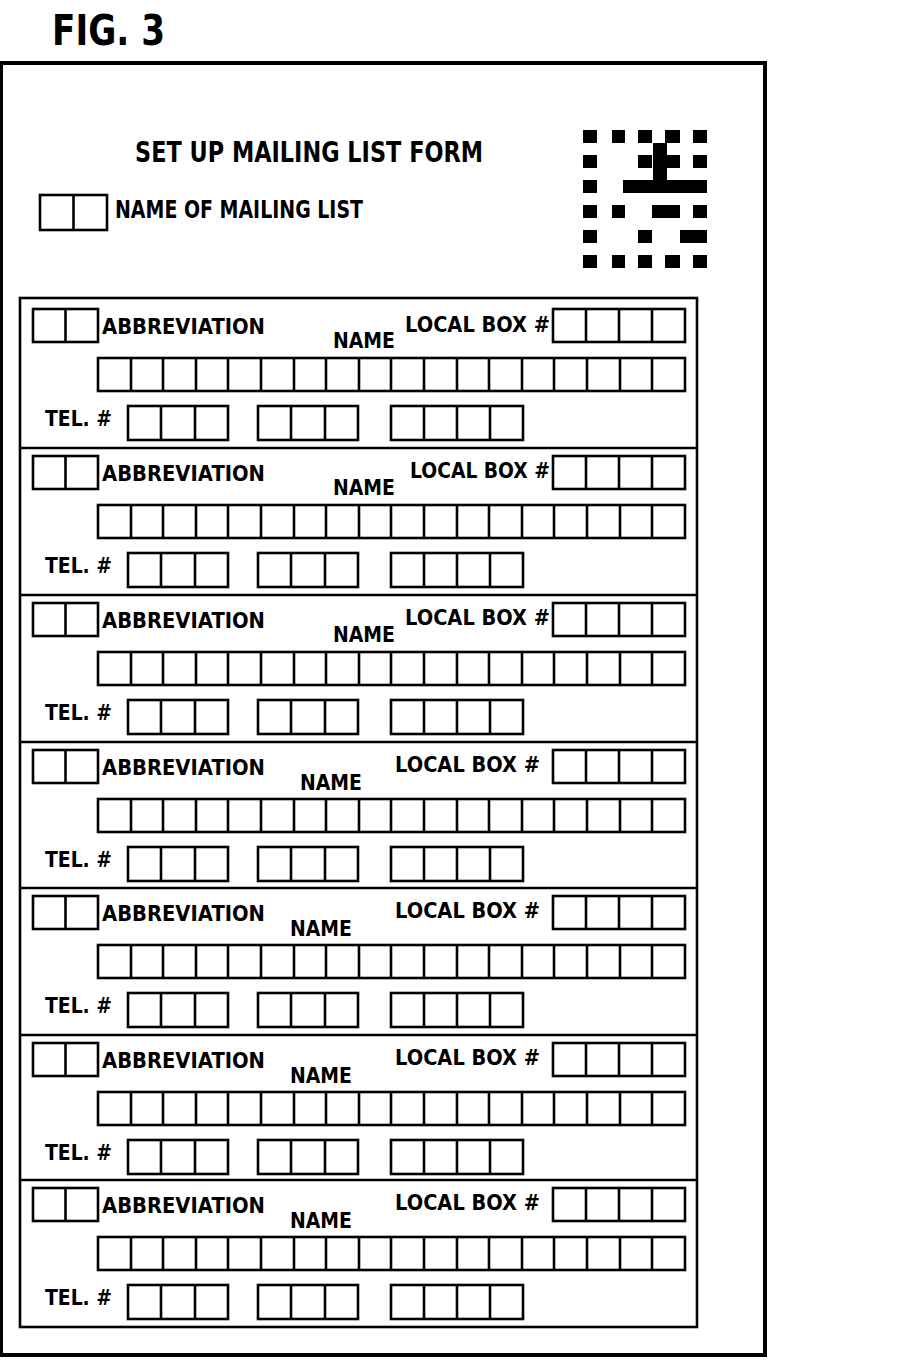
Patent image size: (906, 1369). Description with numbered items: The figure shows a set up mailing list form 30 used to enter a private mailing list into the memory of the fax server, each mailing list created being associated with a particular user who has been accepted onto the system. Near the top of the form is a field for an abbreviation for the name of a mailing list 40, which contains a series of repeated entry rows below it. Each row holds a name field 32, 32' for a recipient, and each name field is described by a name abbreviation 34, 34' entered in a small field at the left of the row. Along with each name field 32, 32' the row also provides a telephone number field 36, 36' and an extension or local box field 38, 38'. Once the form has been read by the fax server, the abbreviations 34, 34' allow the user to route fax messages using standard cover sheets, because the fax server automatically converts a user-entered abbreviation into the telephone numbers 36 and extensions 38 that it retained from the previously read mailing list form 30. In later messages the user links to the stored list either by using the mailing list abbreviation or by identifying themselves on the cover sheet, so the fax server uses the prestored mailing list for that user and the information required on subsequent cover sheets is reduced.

The mailing list form 30 is at (549, 152).
The name field 32 is at (391, 360).
The name field 32' is at (391, 501).
The name abbreviation 34 is at (65, 340).
The name abbreviation 34' is at (65, 488).
The telephone number field 36 is at (356, 423).
The telephone number field 36' is at (365, 570).
The local box field 38 is at (645, 327).
The local box field 38' is at (648, 453).
The name of mailing list 40 is at (85, 192).